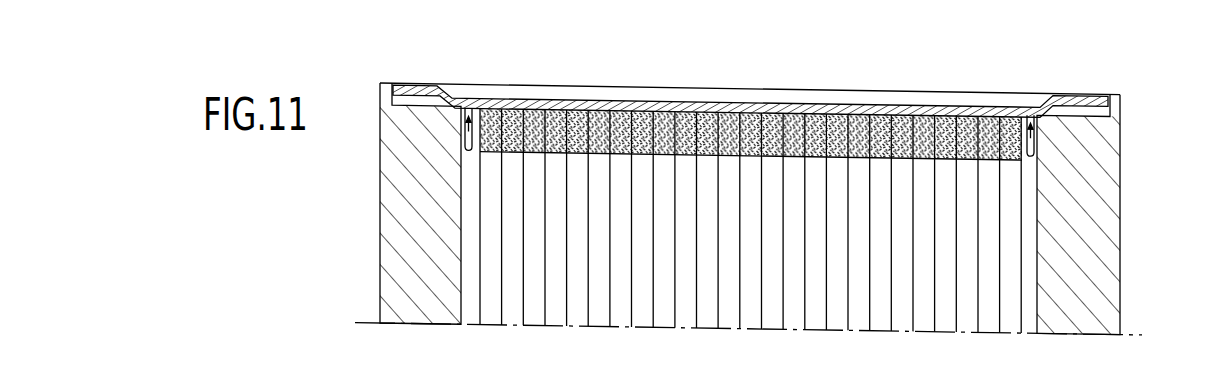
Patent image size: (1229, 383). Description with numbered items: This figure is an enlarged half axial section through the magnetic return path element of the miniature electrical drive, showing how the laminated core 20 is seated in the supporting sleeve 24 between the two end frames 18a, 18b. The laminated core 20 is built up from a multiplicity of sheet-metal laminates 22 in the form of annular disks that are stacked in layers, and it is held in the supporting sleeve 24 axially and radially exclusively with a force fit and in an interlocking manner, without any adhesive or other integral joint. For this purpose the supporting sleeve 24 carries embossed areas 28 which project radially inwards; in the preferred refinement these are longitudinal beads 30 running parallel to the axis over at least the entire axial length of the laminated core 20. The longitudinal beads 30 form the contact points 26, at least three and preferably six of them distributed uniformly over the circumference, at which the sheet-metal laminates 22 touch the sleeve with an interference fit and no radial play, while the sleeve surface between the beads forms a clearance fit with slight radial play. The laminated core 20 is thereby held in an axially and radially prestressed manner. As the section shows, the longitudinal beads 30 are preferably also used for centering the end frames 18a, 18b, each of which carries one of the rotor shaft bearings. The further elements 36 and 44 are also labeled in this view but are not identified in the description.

The end frame 18a is at (1083, 248).
The end frame 18b is at (408, 233).
The laminated core 20 is at (522, 288).
The sheet-metal laminates 22 is at (683, 322).
The supporting sleeve 24 is at (410, 85).
The contact points 26 is at (1020, 96).
The embossed areas 28 is at (392, 382).
The longitudinal beads 30 is at (765, 108).
The connection 36 is at (1216, 374).
The plate section 44 is at (592, 382).